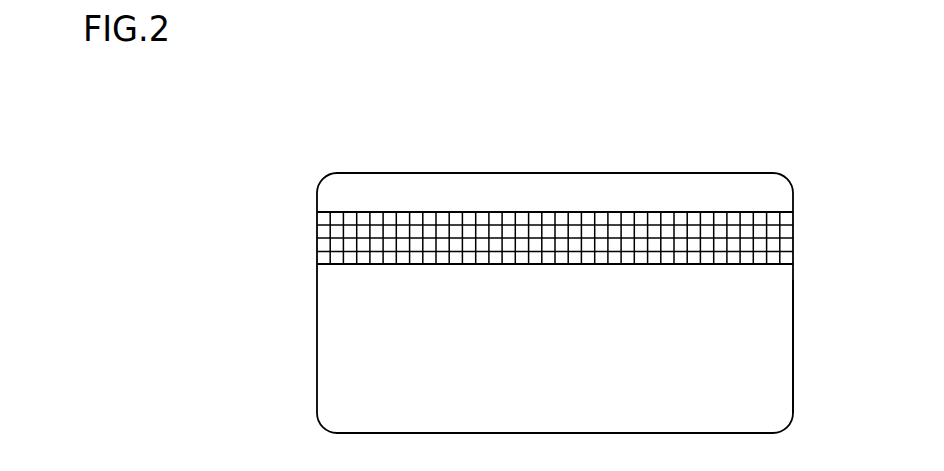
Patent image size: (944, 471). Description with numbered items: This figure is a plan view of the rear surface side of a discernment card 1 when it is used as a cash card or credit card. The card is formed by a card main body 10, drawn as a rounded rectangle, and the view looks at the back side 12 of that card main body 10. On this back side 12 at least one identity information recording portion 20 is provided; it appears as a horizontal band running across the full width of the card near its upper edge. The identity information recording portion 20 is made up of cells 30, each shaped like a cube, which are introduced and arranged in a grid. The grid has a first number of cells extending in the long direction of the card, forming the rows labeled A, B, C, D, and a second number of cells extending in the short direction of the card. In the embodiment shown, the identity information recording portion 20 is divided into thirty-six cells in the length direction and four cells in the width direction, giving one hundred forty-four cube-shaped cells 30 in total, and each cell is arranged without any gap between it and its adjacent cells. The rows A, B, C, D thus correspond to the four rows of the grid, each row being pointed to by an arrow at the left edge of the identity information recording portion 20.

The discernment card 1 is at (816, 187).
The card main body 10 is at (503, 173).
The back side 12 is at (772, 372).
The identity information recording portion 20 is at (559, 212).
The cell 30 is at (326, 216).
The row of cells in the long card direction A is at (300, 211).
The row of cells in the long card direction B is at (299, 229).
The row of cells in the long card direction C is at (299, 246).
The row of cells in the long card direction D is at (300, 264).